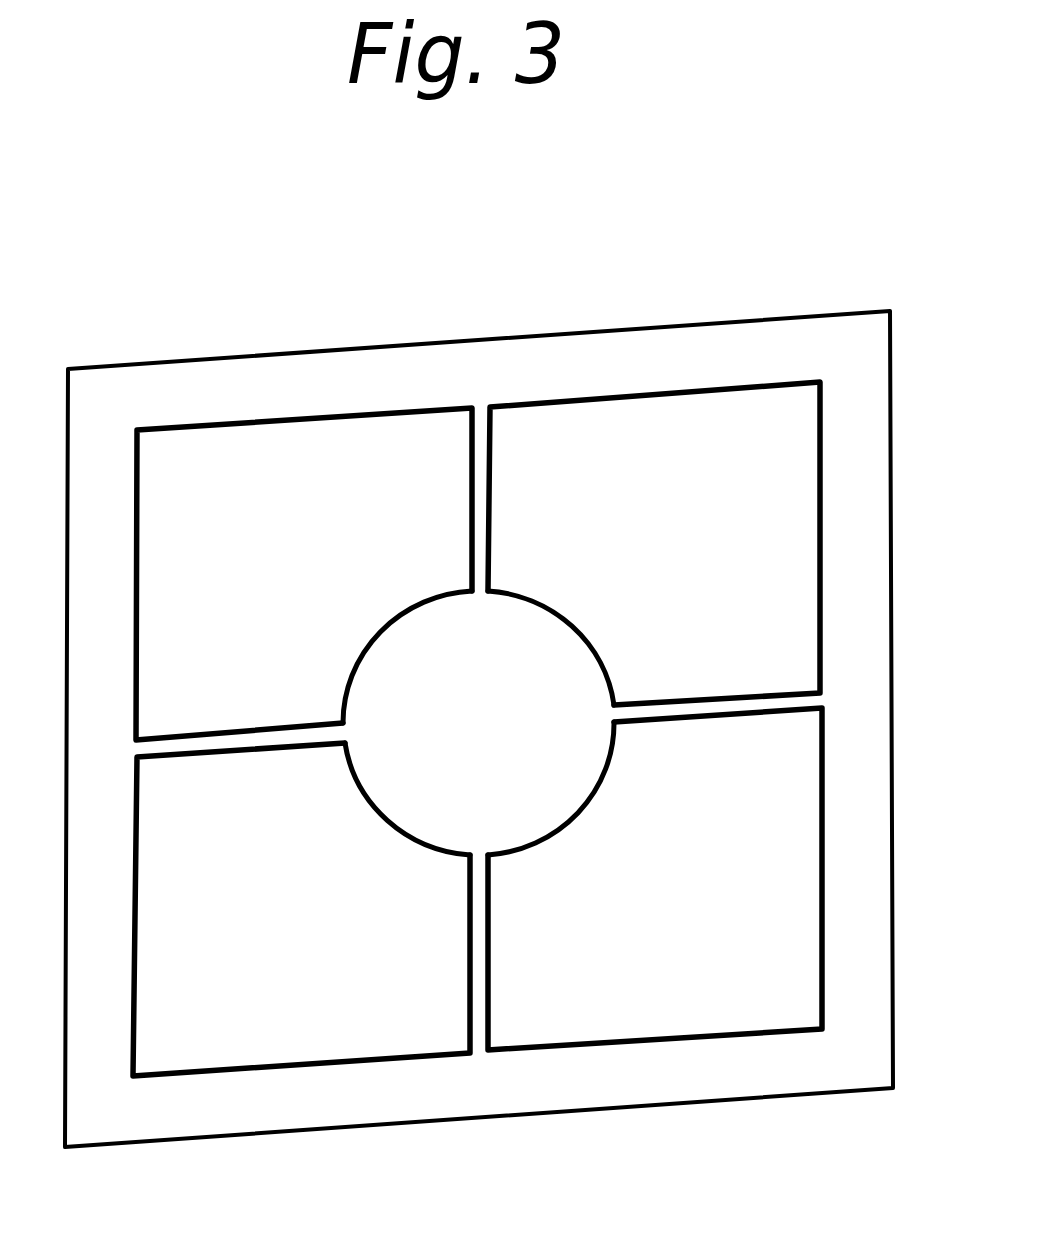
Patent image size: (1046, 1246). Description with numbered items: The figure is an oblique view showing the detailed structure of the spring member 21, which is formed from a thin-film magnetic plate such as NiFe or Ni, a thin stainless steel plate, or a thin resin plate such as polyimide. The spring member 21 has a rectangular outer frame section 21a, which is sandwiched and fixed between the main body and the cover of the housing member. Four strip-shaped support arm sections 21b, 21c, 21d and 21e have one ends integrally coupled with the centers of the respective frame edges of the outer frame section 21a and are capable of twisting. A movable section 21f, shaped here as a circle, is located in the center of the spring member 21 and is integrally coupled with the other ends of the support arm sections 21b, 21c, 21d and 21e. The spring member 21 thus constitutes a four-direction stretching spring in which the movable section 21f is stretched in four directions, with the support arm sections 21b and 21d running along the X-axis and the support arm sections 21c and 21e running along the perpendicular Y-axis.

The spring member 21 is at (856, 232).
The rectangular outer frame section 21a is at (628, 355).
The support arm section 21b is at (226, 742).
The support arm section 21c is at (483, 465).
The support arm section 21d is at (708, 708).
The support arm section 21e is at (480, 964).
The movable section 21f is at (570, 795).